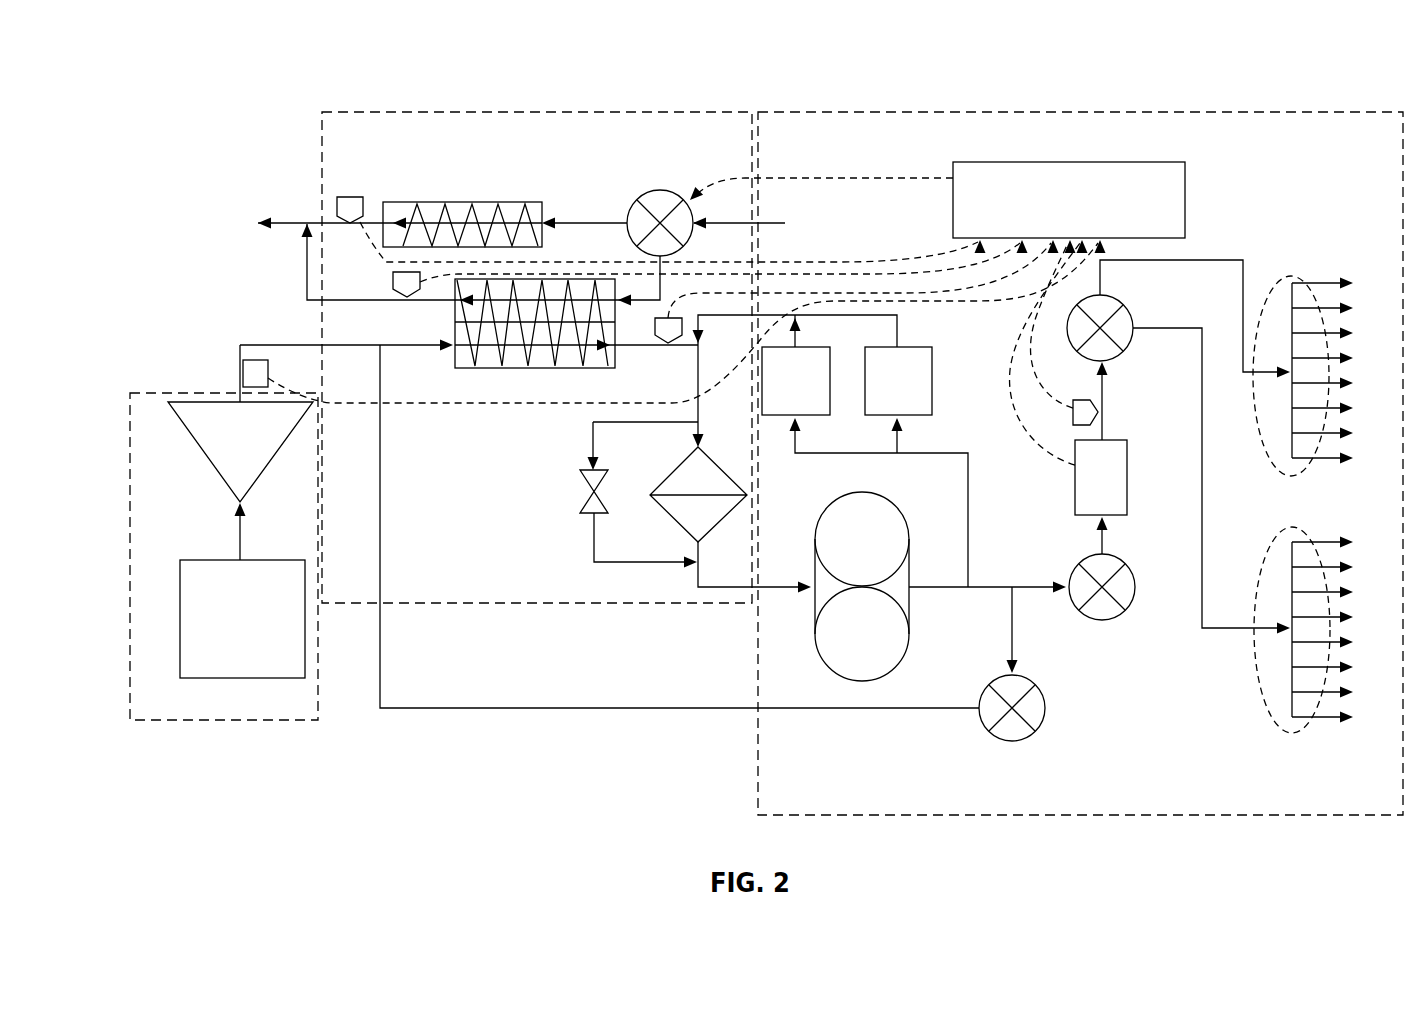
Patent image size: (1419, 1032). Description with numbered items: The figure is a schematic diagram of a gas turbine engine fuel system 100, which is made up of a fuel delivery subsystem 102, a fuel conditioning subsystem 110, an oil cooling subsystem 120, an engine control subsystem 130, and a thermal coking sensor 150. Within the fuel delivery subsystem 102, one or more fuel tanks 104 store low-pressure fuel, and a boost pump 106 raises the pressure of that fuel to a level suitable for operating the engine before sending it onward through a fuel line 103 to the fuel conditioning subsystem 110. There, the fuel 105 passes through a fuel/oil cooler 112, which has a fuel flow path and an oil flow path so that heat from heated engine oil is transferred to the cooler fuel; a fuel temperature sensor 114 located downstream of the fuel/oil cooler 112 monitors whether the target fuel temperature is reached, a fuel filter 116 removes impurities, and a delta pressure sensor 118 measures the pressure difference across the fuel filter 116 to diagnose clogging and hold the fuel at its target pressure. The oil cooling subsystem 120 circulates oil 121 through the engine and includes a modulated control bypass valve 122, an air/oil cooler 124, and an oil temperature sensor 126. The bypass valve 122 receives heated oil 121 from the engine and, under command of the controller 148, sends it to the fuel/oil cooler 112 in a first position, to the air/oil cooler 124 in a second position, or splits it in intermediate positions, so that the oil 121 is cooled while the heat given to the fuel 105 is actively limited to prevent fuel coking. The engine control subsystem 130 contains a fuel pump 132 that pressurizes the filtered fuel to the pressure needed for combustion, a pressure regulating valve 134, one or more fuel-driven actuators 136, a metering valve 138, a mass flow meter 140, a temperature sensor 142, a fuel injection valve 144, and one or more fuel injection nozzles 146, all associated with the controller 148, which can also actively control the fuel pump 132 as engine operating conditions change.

The gas turbine engine fuel system 100 is at (230, 106).
The fuel delivery subsystem 102 is at (120, 478).
The fuel line 103 is at (347, 348).
The fuel tanks 104 is at (237, 560).
The fuel 105 is at (240, 344).
The boost pump 106 is at (215, 467).
The fuel conditioning subsystem 110 is at (482, 608).
The fuel/oil cooler 112 is at (458, 370).
The fuel temperature sensor 114 is at (393, 278).
The fuel filter 116 is at (680, 465).
The delta pressure sensor 118 is at (580, 472).
The oil cooling subsystem 120 is at (368, 96).
The oil 121 is at (290, 220).
The modulated control bypass valve 122 is at (632, 213).
The air/oil cooler 124 is at (508, 201).
The oil temperature sensor 126 is at (335, 202).
The engine control subsystem 130 is at (806, 96).
The fuel pump 132 is at (910, 567).
The pressure regulating valve 134 is at (990, 685).
The fuel-driven actuators 136 is at (773, 418).
The metering valve 138 is at (1118, 614).
The mass flow meter 140 is at (1075, 474).
The temperature sensor 142 is at (1073, 411).
The fuel injection valve 144 is at (1136, 320).
The fuel injection nozzles 146 is at (1280, 472).
The controller 148 is at (1185, 180).
The thermal coking sensor 150 is at (258, 360).